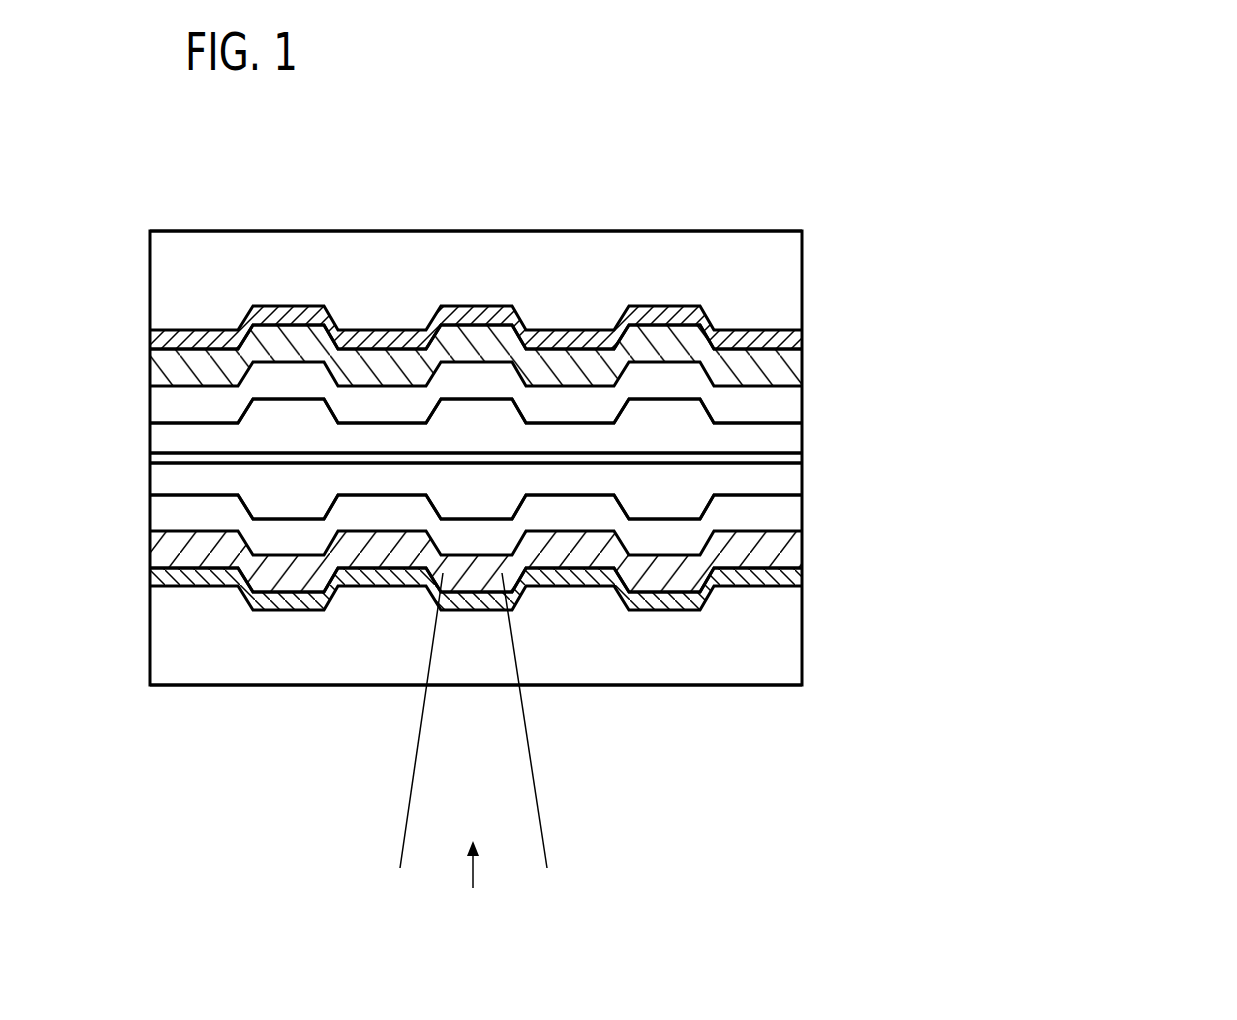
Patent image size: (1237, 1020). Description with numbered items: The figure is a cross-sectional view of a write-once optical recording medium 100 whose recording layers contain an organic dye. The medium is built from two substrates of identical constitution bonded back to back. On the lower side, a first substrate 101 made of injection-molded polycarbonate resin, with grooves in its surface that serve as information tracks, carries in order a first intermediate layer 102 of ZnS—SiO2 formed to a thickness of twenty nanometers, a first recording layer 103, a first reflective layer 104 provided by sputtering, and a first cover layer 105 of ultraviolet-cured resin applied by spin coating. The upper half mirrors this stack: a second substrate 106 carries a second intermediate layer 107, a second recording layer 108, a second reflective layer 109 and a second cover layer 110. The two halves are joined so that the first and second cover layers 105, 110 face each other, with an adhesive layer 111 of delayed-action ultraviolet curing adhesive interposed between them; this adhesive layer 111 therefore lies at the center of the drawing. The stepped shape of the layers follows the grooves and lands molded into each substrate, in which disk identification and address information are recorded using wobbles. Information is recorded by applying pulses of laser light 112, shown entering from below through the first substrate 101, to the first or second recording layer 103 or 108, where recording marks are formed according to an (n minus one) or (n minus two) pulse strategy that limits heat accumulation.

The optical recording medium 100 is at (458, 176).
The first substrate 101 is at (788, 644).
The first intermediate layer 102 is at (788, 587).
The first recording layer 103 is at (788, 555).
The first reflective layer 104 is at (788, 523).
The first cover layer 105 is at (788, 491).
The second substrate 106 is at (788, 270).
The second intermediate layer 107 is at (788, 343).
The second recording layer 108 is at (788, 369).
The second reflective layer 109 is at (788, 399).
The second cover layer 110 is at (788, 431).
The adhesive layer 111 is at (788, 461).
The laser light 112 is at (512, 746).